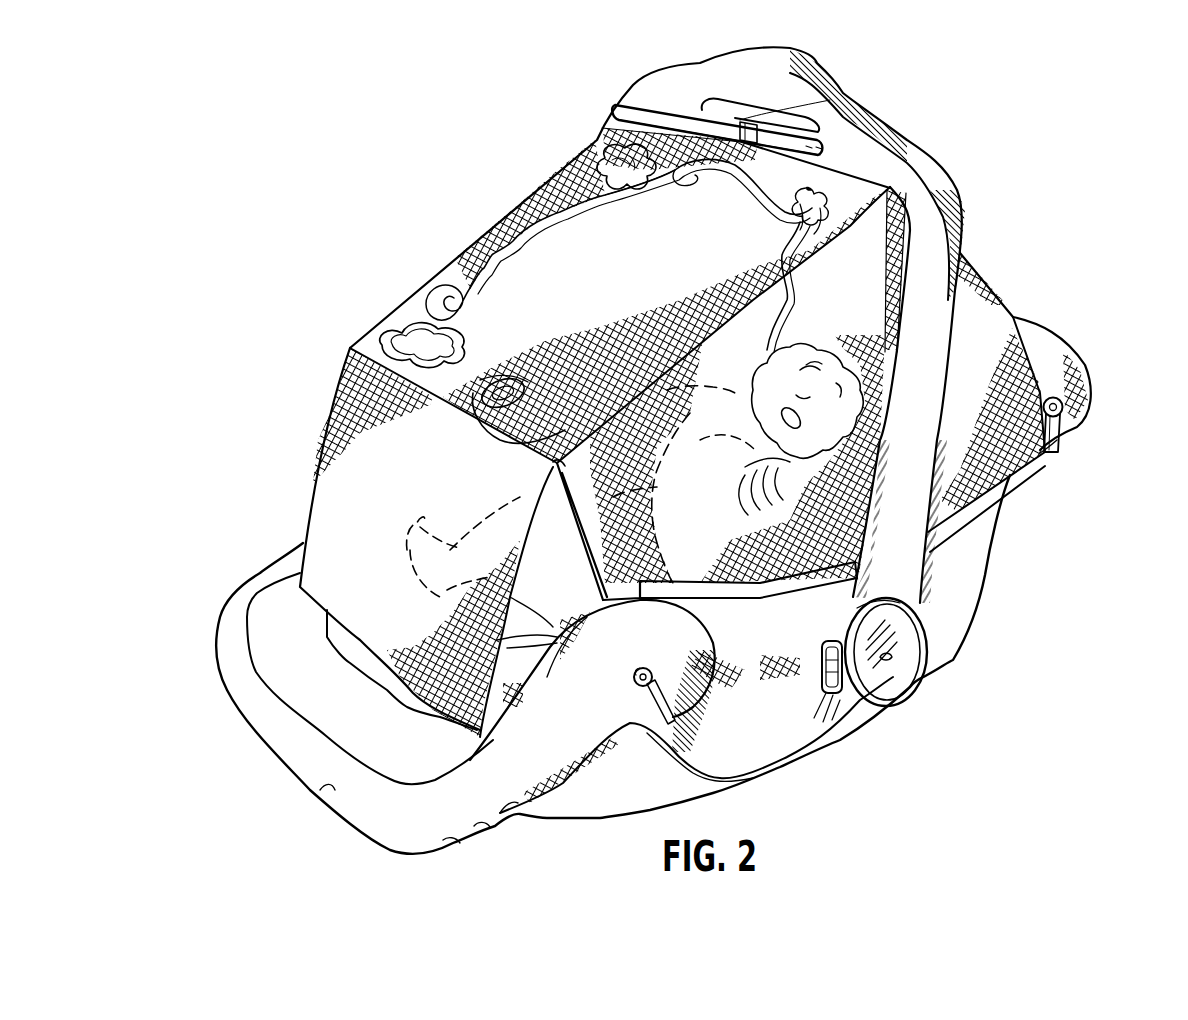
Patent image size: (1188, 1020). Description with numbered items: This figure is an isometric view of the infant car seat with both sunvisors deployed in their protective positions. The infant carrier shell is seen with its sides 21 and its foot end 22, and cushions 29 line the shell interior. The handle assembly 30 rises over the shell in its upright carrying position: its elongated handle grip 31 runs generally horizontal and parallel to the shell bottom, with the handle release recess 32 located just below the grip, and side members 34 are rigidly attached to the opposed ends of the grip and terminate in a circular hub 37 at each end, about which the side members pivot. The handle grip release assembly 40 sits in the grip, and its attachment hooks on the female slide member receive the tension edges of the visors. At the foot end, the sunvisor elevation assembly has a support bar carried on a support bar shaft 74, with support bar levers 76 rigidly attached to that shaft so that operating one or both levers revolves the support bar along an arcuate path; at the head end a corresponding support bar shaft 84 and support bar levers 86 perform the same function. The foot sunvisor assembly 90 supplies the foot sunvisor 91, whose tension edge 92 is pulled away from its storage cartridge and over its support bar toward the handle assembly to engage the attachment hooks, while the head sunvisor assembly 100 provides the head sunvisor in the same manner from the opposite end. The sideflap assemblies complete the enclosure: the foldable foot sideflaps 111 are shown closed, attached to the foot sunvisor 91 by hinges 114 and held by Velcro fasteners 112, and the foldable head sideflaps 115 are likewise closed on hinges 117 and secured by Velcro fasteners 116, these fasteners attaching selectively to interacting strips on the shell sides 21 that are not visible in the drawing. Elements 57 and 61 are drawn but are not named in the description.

The sides 21 is at (645, 773).
The foot end 22 is at (560, 800).
The cushions 29 is at (588, 710).
The handle assembly 30 is at (935, 126).
The handle grip 31 is at (793, 80).
The handle release recess 32 is at (748, 118).
The side members 34 is at (950, 192).
The circular hub 37 is at (833, 693).
The handle grip release assembly 40 is at (735, 118).
The handle pivot disc 57 is at (890, 655).
The release button 61 is at (812, 682).
The support bar shaft 74 is at (646, 668).
The support bar levers 76 is at (676, 692).
The support bar shaft 84 is at (1058, 402).
The support bar levers 86 is at (1057, 440).
The foot sunvisor assembly 90 is at (292, 508).
The foot sunvisor 91 is at (631, 278).
The tension edge 92 is at (647, 108).
The head sunvisor assembly 100 is at (1005, 272).
The foot sideflaps 111 is at (762, 431).
The Velcro fasteners 112 is at (668, 583).
The hinges 114 is at (433, 275).
The head sideflaps 115 is at (1000, 346).
The Velcro fasteners 116 is at (1012, 476).
The hinges 117 is at (972, 268).